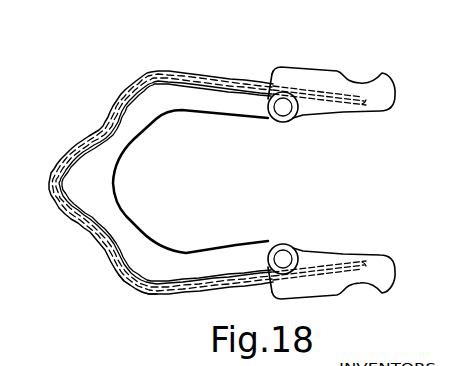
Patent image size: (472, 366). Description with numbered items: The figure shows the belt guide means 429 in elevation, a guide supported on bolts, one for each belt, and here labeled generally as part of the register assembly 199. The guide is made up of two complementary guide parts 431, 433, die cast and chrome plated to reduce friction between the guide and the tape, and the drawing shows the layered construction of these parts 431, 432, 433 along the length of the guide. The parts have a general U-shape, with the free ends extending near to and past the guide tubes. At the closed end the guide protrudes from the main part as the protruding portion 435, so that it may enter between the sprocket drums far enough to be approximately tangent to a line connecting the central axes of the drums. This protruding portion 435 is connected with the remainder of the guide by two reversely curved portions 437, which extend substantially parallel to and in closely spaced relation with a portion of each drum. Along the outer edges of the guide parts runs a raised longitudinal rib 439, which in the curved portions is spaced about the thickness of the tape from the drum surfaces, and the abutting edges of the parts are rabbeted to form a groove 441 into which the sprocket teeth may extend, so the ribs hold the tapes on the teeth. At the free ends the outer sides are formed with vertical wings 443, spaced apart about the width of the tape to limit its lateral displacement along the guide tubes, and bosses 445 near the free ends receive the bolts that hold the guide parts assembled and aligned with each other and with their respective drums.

The clamp assembly 199 is at (20, 225).
The belt guide means 429 is at (118, 82).
The guide part 431 is at (163, 68).
The band layer 432 is at (164, 182).
The guide part 433 is at (165, 182).
The protruding portion 435 is at (47, 181).
The reversely curved portions 437 is at (100, 123).
The longitudinal rib 439 is at (126, 285).
The groove 441 is at (152, 291).
The vertical wings 443 is at (380, 80).
The bosses 445 is at (285, 123).